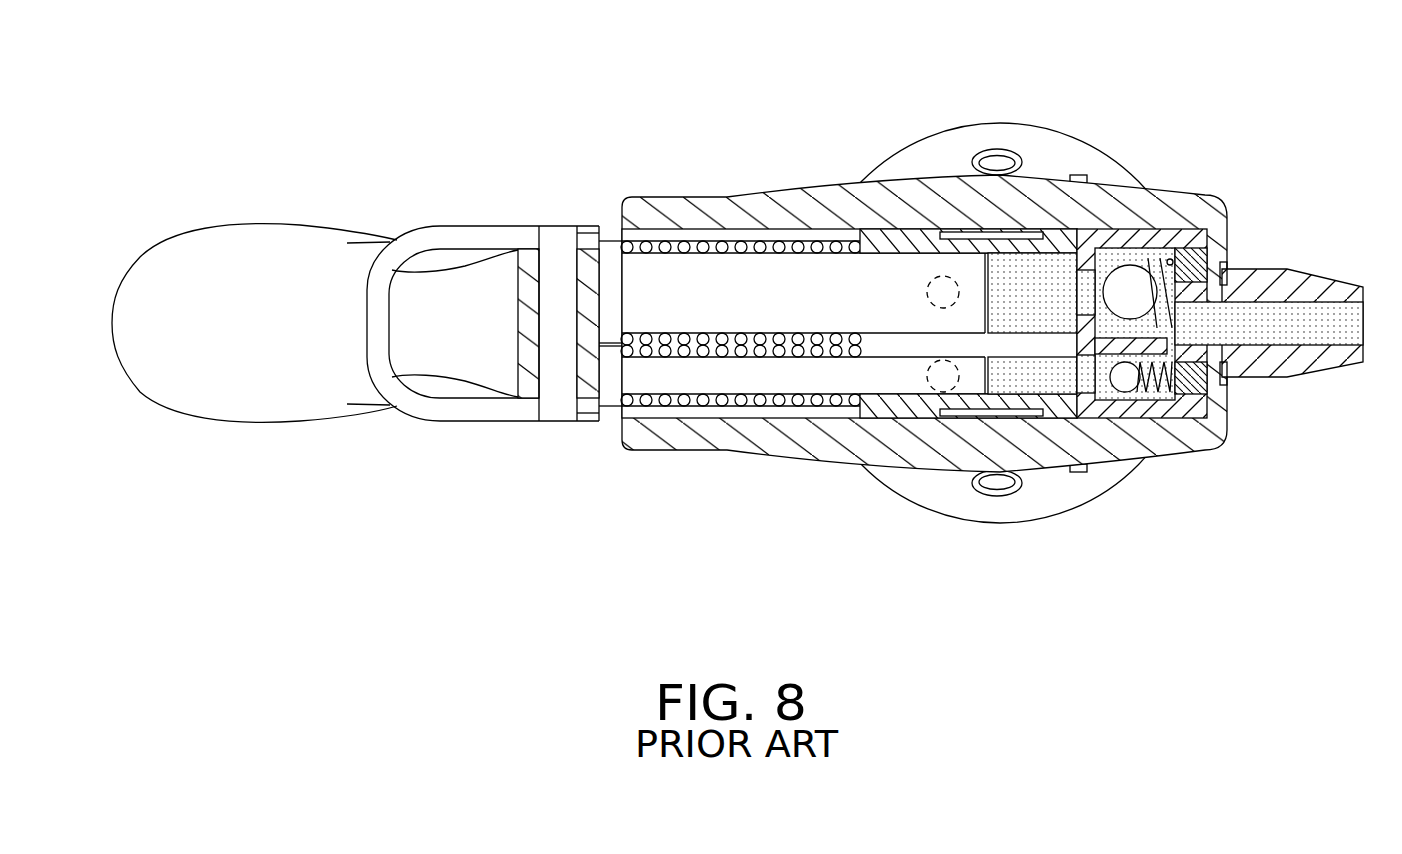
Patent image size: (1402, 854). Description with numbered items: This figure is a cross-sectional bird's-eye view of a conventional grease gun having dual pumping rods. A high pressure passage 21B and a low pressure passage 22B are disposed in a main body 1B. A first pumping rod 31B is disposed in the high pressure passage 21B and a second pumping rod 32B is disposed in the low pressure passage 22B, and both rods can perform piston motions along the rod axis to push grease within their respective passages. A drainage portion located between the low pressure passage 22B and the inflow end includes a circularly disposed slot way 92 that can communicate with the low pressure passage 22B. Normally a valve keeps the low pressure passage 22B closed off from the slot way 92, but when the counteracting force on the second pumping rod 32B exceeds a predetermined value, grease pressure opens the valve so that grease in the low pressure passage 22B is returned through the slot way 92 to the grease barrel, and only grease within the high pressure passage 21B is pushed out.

The main body 1B is at (665, 438).
The high pressure passage 21B is at (1020, 380).
The low pressure passage 22B is at (1040, 262).
The first pumping rod 31B is at (813, 385).
The second pumping rod 32B is at (772, 268).
The slot way 92 is at (958, 236).